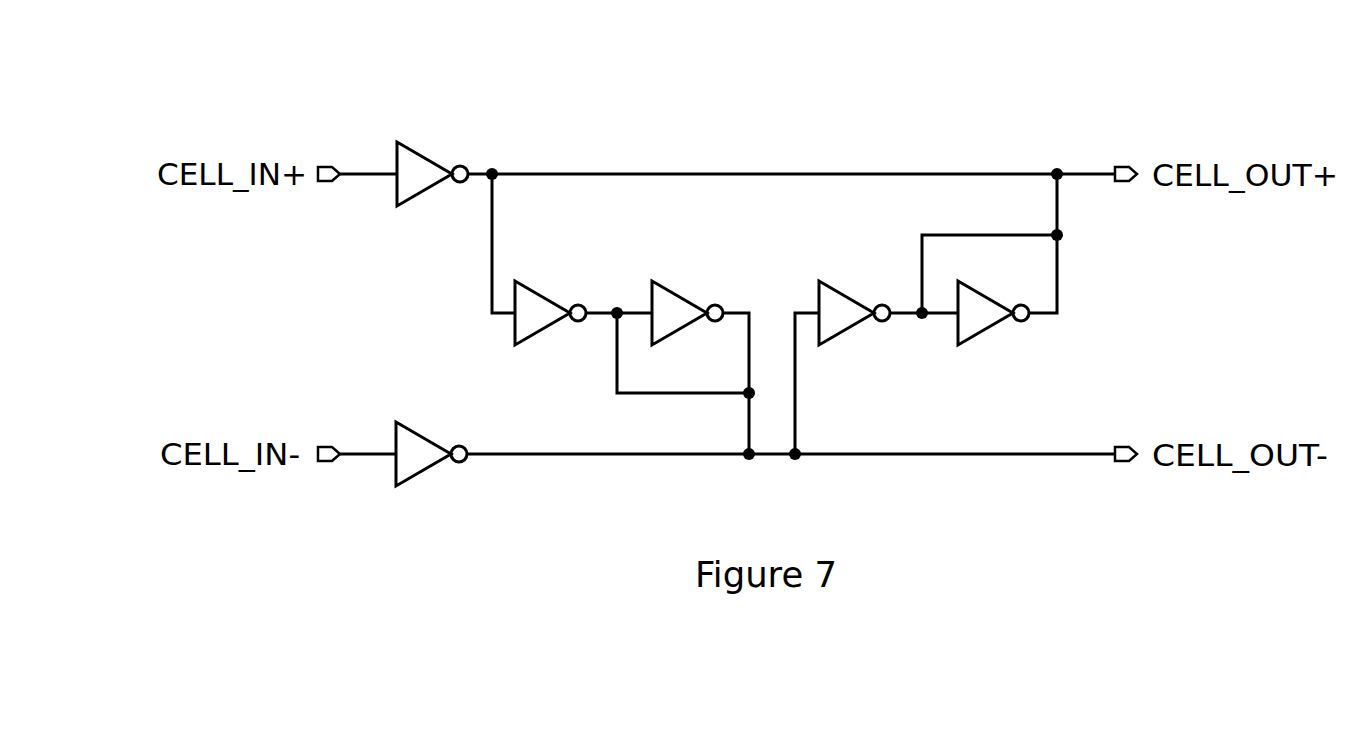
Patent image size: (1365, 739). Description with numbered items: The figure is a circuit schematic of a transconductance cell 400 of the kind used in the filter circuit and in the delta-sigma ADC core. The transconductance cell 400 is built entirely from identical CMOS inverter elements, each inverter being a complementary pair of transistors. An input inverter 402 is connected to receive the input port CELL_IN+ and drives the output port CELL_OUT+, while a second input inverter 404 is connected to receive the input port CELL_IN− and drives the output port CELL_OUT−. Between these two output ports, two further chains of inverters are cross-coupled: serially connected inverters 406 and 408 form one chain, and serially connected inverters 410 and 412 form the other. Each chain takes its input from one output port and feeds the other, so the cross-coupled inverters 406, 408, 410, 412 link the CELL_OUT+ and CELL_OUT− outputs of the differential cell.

The transconductance cell 400 is at (722, 68).
The input inverter 402 is at (435, 153).
The input inverter 404 is at (435, 434).
The inverter 406 is at (557, 300).
The inverter 408 is at (693, 300).
The inverter 410 is at (865, 300).
The inverter 412 is at (991, 332).